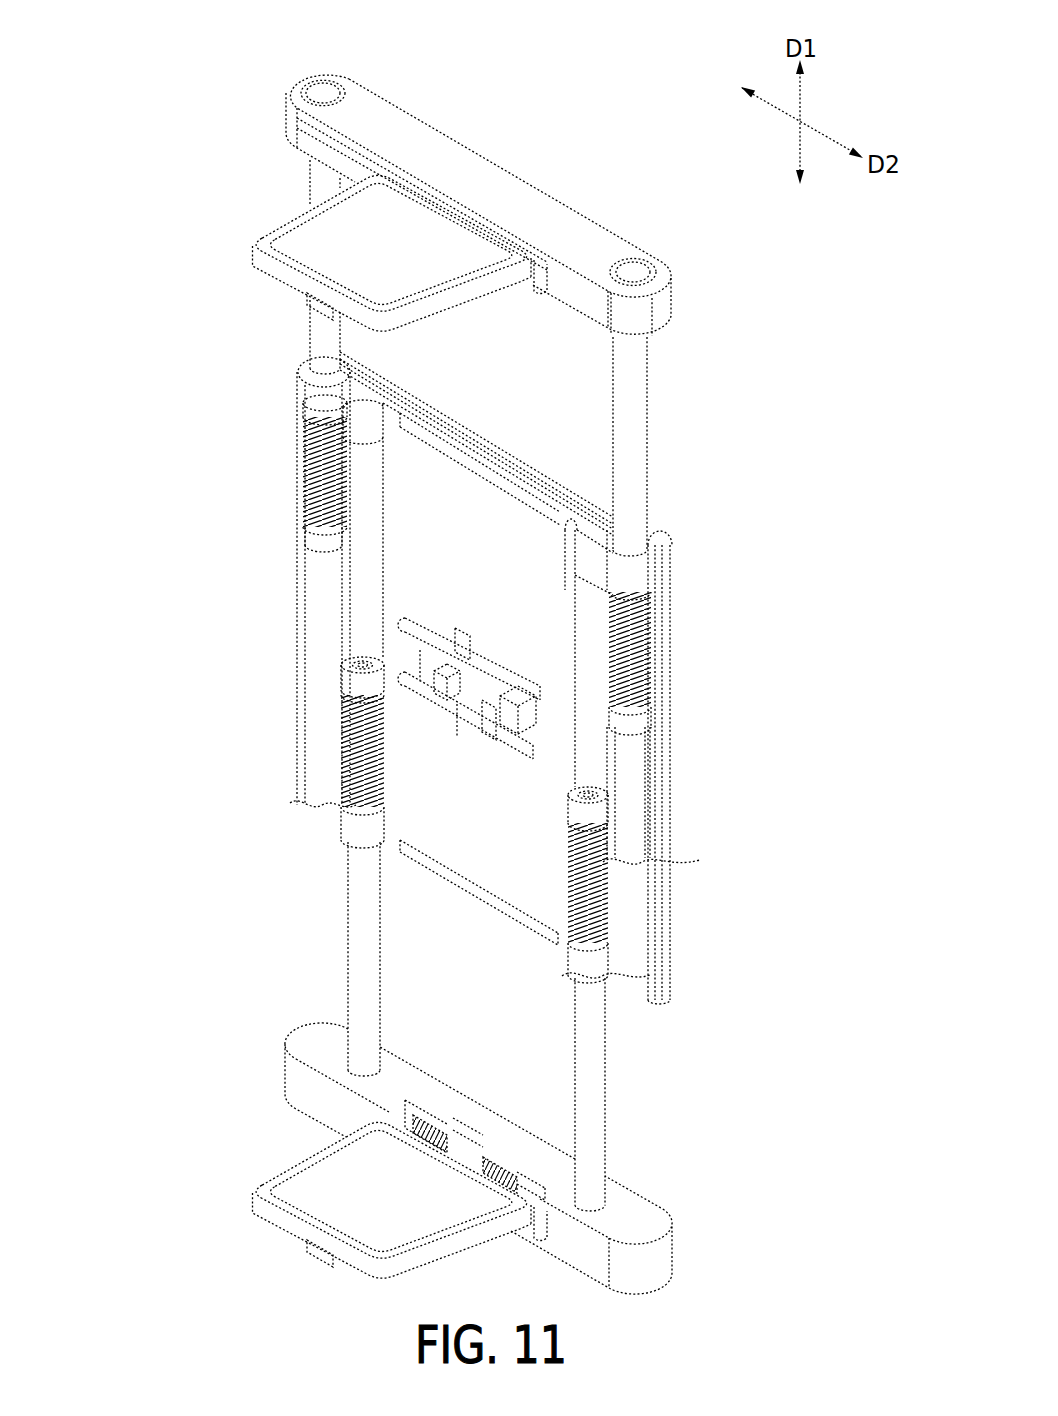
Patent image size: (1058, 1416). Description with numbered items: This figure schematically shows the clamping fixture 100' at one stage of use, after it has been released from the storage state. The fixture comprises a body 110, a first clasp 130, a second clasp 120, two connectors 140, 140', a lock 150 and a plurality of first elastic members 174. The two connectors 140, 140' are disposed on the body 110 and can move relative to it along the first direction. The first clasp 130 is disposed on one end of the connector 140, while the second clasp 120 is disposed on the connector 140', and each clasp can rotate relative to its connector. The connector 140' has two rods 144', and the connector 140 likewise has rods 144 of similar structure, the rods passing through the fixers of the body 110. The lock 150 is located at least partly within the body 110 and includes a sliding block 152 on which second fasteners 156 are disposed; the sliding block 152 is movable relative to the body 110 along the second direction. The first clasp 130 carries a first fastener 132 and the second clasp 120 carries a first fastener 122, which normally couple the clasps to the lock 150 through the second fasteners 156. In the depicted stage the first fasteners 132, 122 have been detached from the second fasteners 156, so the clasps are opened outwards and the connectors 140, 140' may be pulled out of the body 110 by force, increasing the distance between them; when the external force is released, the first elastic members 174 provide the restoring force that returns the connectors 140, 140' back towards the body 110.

The clamping fixture 100' is at (365, 655).
The body 110 is at (665, 766).
The second clasp 120 is at (413, 228).
The first fastener 122 is at (298, 298).
The first clasp 130 is at (465, 1238).
The first fastener 132 is at (300, 1247).
The connector 140 is at (522, 1158).
The connector 140' is at (478, 205).
The rod 144 is at (479, 1026).
The rod 144' is at (470, 358).
The lock 150 is at (442, 574).
The sliding block 152 is at (494, 712).
The second fastener 156 is at (467, 640).
The first elastic member 174 is at (312, 450).